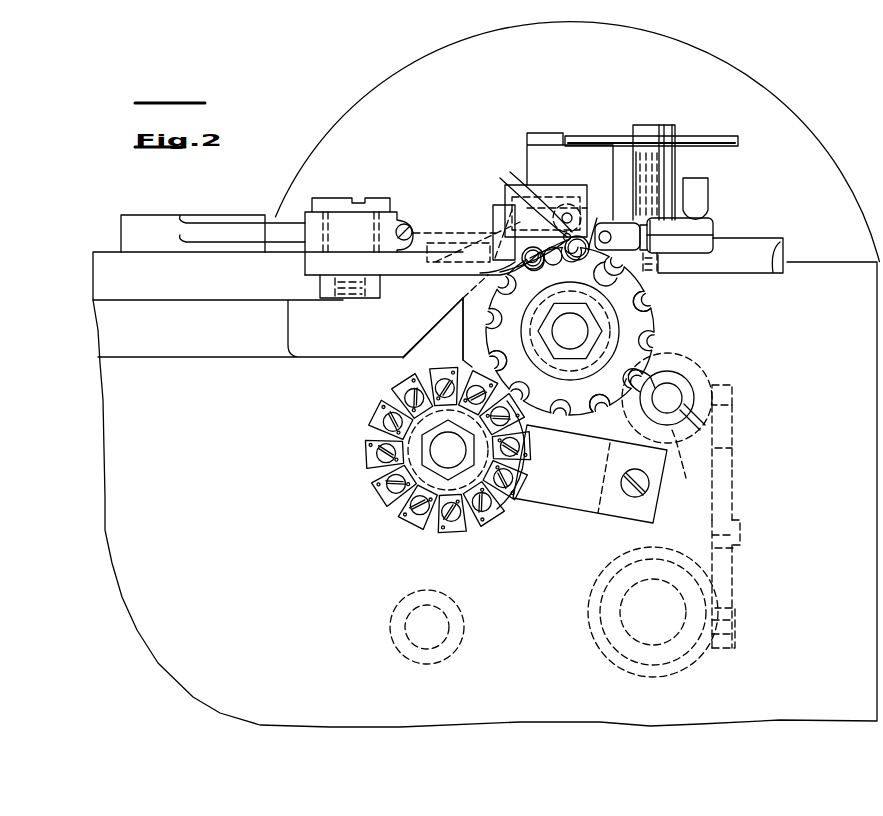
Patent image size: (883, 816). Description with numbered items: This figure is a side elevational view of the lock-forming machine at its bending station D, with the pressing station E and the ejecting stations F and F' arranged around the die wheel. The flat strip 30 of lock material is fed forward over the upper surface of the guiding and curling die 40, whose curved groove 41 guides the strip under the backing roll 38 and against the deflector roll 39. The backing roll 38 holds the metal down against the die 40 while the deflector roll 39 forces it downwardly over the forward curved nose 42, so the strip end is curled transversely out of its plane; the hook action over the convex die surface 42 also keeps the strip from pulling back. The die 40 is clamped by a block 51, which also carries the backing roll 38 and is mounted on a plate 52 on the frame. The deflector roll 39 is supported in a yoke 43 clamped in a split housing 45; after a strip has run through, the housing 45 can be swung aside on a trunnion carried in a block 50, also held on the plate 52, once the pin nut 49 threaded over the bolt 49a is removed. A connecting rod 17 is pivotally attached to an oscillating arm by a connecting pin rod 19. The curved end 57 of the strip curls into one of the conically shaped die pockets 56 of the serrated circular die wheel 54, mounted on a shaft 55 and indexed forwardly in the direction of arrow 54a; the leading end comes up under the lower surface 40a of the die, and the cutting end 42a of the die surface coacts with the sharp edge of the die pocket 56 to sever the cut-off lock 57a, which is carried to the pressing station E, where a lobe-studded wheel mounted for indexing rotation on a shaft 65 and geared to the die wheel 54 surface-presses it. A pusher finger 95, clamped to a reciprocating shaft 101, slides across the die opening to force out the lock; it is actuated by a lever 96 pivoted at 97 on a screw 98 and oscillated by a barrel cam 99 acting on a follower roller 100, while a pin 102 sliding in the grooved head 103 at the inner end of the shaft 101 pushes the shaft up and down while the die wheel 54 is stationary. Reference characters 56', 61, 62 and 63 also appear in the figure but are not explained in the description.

The connecting rod 17 is at (288, 232).
The connecting pin rod 19 is at (378, 200).
The flat strip 30 is at (440, 235).
The backing roll 38 is at (567, 203).
The deflector roll 39 is at (597, 216).
The curling die 40 is at (565, 236).
The lower surface of guide die 40a is at (500, 270).
The curved groove 41 is at (552, 263).
The forward curved nose 42 is at (583, 236).
The cutting end 42a is at (588, 244).
The yoke 43 is at (655, 242).
The housing 45 is at (713, 220).
The pin nut 49 is at (664, 132).
The bolt 49a is at (660, 266).
The block 50 is at (700, 188).
The block 51 is at (537, 195).
The plate 52 is at (790, 250).
The serrated circular die wheel 54 is at (664, 348).
The arrow 54a is at (543, 412).
The shaft 55 is at (580, 330).
The die pockets 56 is at (651, 295).
The notch 56' is at (609, 412).
The curved end of strip 57 is at (617, 236).
The cut-off lock 57a is at (566, 260).
The edge 61 is at (500, 283).
The edge 62 is at (482, 322).
The notch 63 is at (502, 338).
The shaft 65 is at (455, 467).
The pusher finger 95 is at (650, 372).
The lever 96 is at (730, 450).
The pivot 97 is at (730, 545).
The screw 98 is at (740, 520).
The barrel cam 99 is at (700, 660).
The follower roller 100 is at (705, 645).
The reciprocating shaft 101 is at (678, 400).
The pin 102 is at (728, 398).
The grooved head 103 is at (686, 466).
The bending station D is at (723, 224).
The pressing station E is at (540, 386).
The ejecting station F is at (550, 527).
The ejecting station F' is at (714, 329).